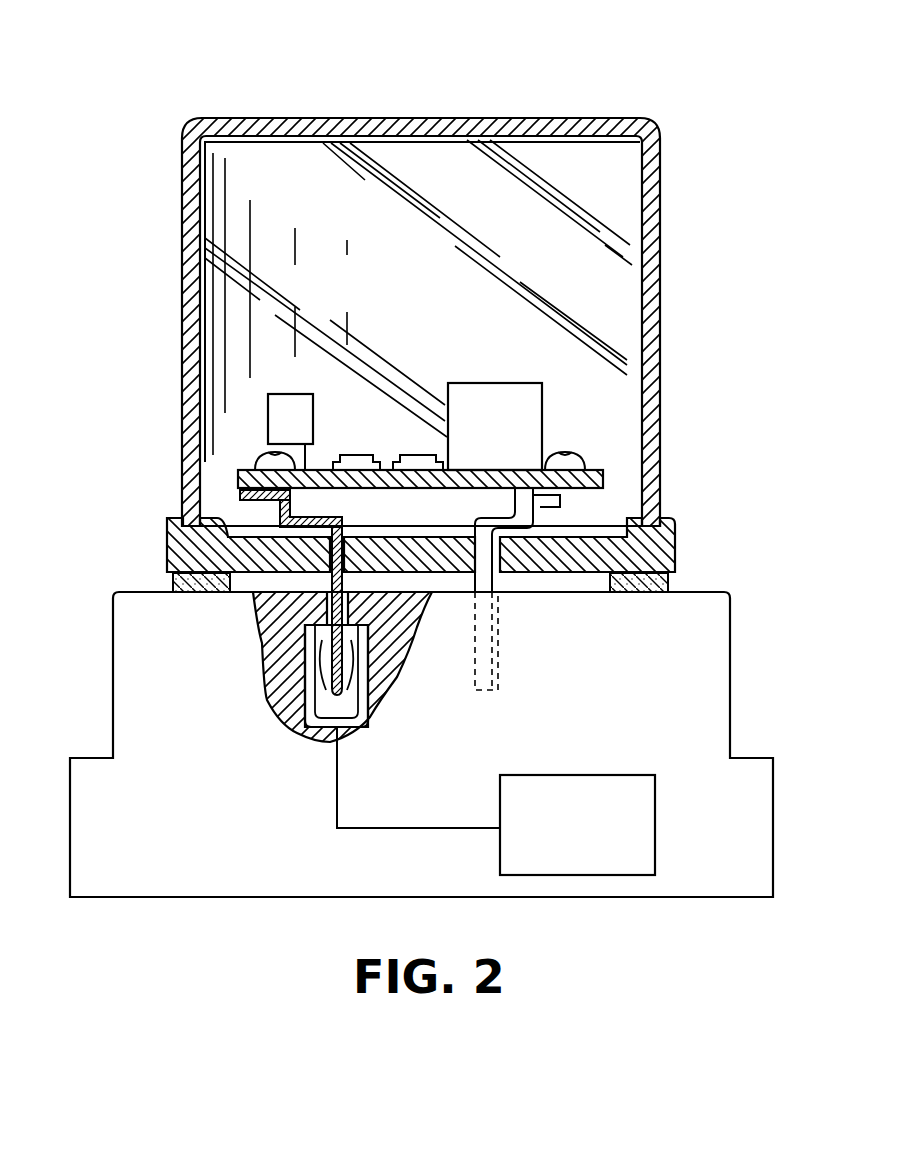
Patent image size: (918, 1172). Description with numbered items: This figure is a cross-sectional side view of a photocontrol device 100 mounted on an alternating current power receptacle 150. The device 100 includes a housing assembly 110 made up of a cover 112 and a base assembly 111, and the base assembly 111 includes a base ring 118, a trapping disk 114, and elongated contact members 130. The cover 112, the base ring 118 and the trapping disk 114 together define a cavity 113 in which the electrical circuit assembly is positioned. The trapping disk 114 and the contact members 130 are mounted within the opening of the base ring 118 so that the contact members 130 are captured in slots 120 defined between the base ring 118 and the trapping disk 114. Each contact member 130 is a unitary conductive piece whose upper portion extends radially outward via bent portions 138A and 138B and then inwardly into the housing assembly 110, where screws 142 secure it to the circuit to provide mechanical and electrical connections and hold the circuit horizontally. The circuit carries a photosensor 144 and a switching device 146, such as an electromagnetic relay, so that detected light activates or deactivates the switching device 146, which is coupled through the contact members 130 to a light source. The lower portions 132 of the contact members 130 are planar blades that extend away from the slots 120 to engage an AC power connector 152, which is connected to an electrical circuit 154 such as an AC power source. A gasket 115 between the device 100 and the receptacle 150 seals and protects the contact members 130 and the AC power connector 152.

The device 100 is at (750, 482).
The housing assembly 110 is at (262, 102).
The base assembly 111 is at (684, 503).
The cover 112 is at (650, 212).
The cavity 113 is at (447, 295).
The trapping disk 114 is at (398, 548).
The gasket 115 is at (662, 583).
The base ring 118 is at (664, 546).
The slots 120 is at (350, 530).
The contact members 130 is at (540, 508).
The lower portions 132 is at (340, 668).
The bent portion 138A is at (282, 524).
The bent portion 138B is at (257, 493).
The screws 142 is at (568, 462).
The photosensor 144 is at (308, 434).
The switching device 146 is at (517, 441).
The AC power receptacle 150 is at (700, 676).
The AC power connector 152 is at (350, 730).
The electrical circuit 154 is at (598, 837).